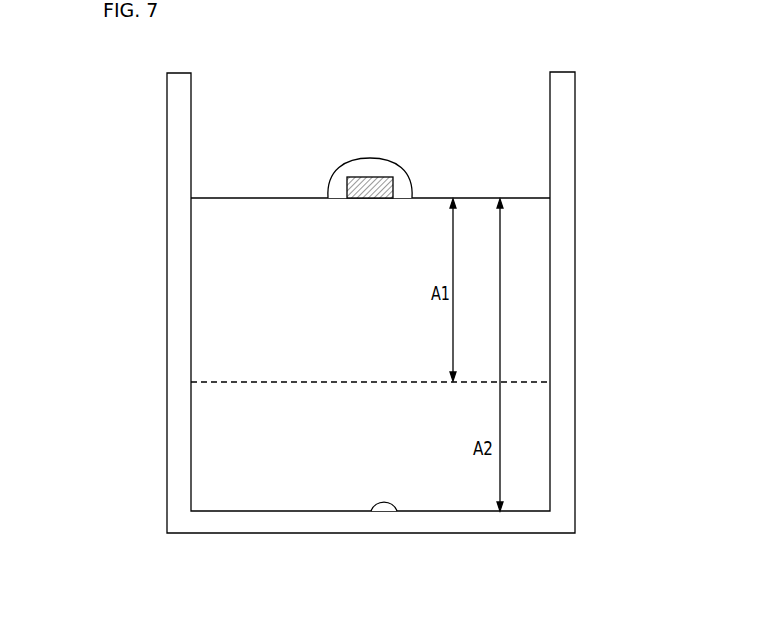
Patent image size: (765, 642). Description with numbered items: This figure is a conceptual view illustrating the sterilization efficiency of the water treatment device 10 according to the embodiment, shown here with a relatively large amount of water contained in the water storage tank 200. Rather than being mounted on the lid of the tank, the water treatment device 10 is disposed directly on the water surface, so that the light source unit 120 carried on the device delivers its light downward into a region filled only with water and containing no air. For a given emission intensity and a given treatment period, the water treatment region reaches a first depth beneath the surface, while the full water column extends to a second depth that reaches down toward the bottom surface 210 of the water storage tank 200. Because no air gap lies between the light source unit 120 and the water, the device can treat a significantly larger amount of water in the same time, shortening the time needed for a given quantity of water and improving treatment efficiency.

The water treatment device 10 is at (370, 158).
The light source unit 120 is at (393, 180).
The water storage tank 200 is at (565, 118).
The bottom surface 210 is at (396, 512).